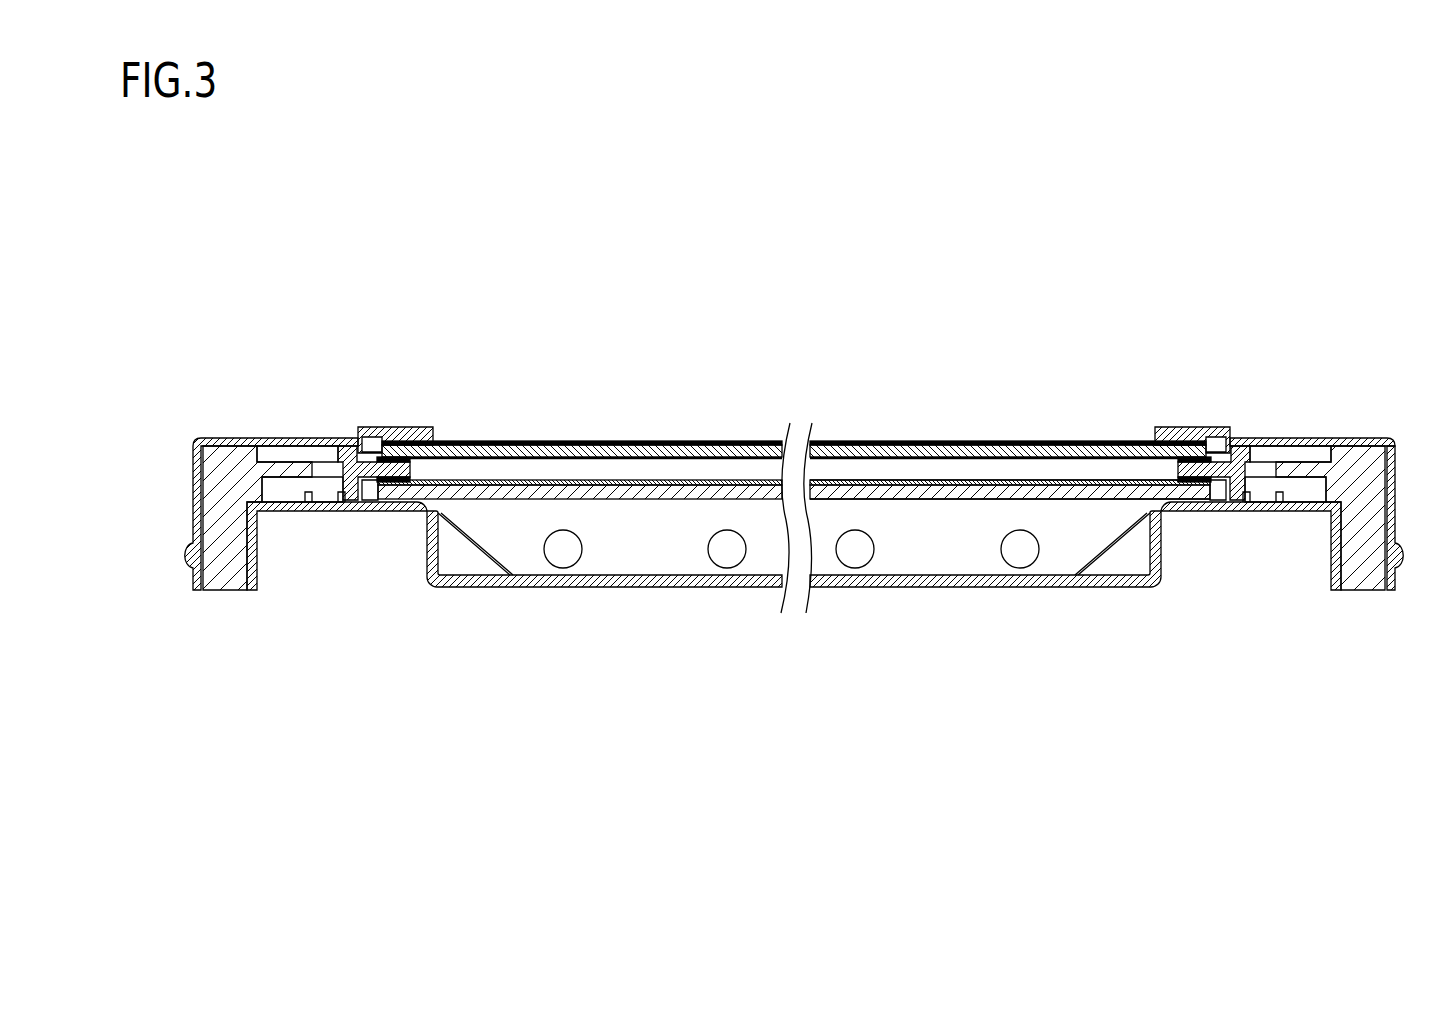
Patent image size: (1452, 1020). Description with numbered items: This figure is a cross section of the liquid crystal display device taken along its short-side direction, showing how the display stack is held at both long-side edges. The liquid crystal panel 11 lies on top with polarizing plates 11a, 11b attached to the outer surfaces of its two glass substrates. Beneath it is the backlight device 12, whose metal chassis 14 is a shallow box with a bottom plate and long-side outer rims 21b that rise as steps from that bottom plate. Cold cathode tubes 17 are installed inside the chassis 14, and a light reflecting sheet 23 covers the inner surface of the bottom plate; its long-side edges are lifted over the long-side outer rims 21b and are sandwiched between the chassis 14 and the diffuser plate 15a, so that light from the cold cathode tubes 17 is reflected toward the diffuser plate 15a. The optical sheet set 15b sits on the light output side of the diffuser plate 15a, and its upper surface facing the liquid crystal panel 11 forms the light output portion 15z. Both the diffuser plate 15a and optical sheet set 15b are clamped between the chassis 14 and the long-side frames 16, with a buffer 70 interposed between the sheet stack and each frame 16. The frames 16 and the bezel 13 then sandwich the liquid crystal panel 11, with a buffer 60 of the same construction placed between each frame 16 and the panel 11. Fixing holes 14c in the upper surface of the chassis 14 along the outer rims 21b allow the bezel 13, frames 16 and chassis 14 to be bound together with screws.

The liquid crystal panel 11 is at (794, 403).
The polarizing plate 11a is at (692, 442).
The polarizing plate 11b is at (722, 458).
The backlight device 12 is at (916, 593).
The bezel 13 is at (1282, 438).
The chassis 14 is at (553, 589).
The fixing hole 14c is at (322, 510).
The diffuser plate 15a is at (880, 494).
The optical sheet set 15b is at (943, 487).
The light output portion 15z is at (1008, 483).
The long-side frame 16 is at (222, 487).
The cold cathode tube 17 is at (728, 568).
The long-side outer rim 21b is at (358, 513).
The light reflecting sheet 23 is at (1062, 572).
The buffer 60 is at (395, 462).
The buffer 70 is at (398, 479).